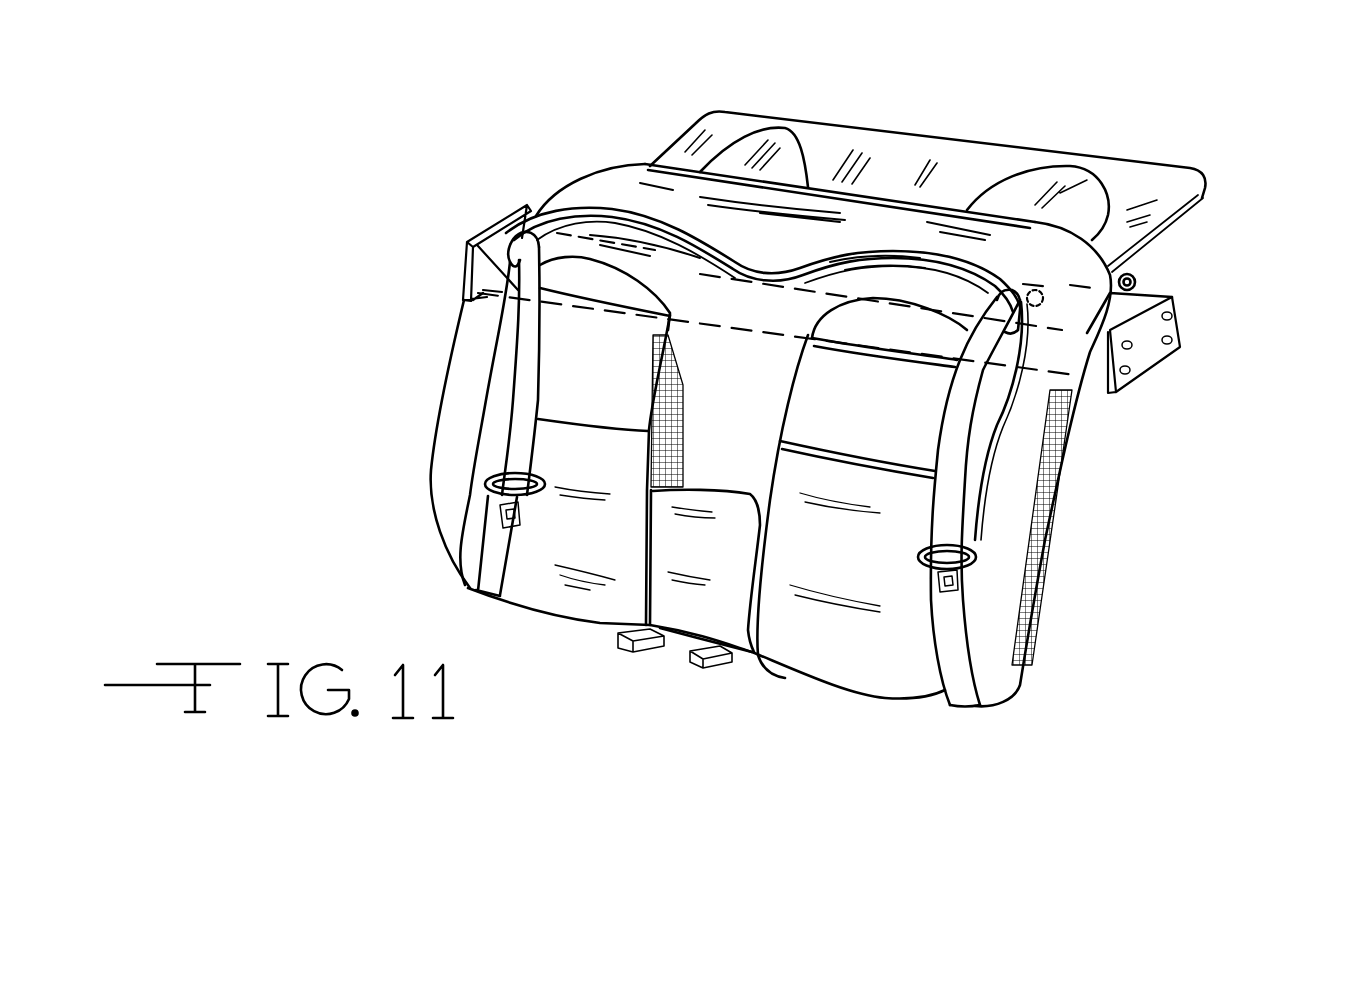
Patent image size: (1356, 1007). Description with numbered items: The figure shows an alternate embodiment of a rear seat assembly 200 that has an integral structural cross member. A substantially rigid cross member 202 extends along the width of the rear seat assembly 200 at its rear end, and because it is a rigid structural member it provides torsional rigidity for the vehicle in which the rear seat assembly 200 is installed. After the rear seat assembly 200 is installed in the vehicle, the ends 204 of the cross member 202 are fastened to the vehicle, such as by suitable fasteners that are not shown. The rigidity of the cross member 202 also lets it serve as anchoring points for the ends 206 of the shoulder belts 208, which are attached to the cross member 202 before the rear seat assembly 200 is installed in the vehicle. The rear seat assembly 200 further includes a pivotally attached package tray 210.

The rear seat assembly 200 is at (466, 178).
The cross member 202 is at (1157, 285).
The ends of the cross member 204 is at (488, 240).
The ends of shoulder belts 206 is at (513, 192).
The shoulder belts 208 is at (504, 447).
The package tray 210 is at (940, 135).